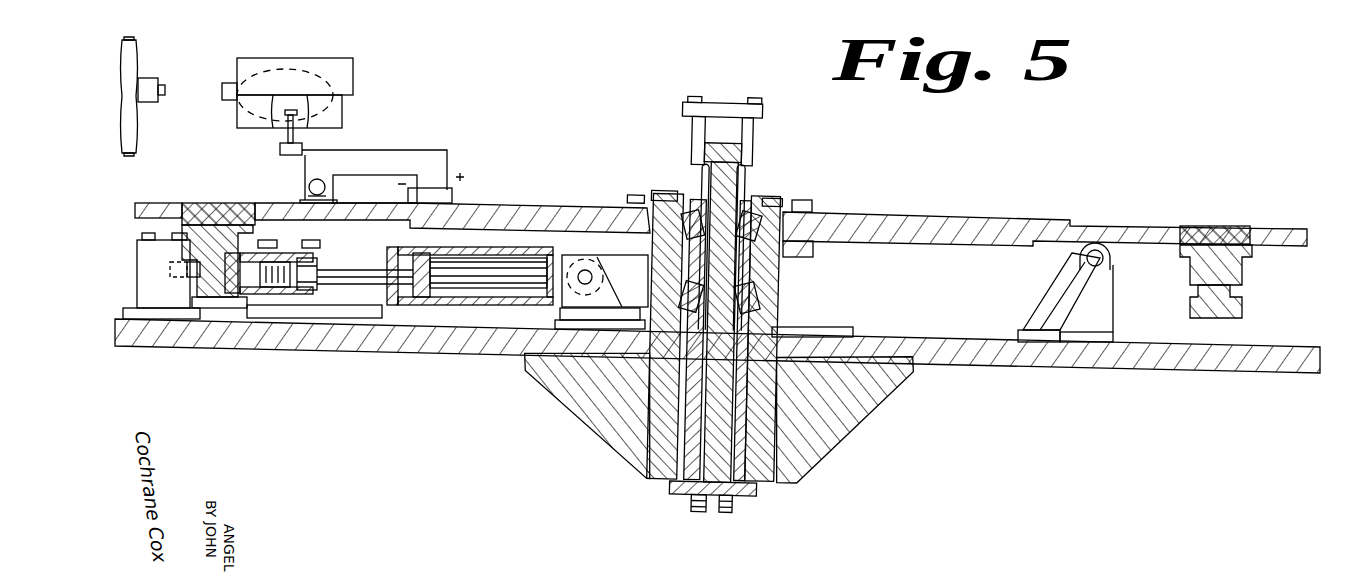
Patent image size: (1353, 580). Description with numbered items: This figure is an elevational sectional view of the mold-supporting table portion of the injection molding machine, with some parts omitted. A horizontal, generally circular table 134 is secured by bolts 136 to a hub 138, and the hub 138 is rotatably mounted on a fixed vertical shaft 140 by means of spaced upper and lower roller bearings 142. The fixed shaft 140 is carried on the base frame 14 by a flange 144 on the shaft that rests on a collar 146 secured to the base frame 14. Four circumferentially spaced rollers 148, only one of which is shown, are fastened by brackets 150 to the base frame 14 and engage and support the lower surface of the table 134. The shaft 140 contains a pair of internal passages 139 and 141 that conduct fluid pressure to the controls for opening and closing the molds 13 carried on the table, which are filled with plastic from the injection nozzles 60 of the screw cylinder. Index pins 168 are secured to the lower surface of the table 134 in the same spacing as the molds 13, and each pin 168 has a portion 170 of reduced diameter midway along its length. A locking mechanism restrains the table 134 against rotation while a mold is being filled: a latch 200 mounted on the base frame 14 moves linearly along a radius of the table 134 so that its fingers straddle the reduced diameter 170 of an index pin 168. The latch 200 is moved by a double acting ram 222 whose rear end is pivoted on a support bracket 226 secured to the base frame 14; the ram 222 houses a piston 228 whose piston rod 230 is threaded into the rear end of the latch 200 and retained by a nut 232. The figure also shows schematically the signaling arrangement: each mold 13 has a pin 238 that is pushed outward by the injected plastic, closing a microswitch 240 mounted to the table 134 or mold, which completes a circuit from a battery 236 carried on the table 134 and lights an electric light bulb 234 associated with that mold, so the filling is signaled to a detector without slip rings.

The mold 13 is at (237, 115).
The base frame 14 is at (1205, 373).
The injection nozzle 60 is at (163, 90).
The table 134 is at (985, 203).
The bolt 136 is at (812, 203).
The hub 138 is at (800, 256).
The internal passage 139 is at (692, 499).
The fixed vertical shaft 140 is at (763, 488).
The internal passage 141 is at (731, 512).
The roller bearing 142 is at (775, 200).
The flange 144 is at (773, 327).
The collar 146 is at (781, 362).
The roller 148 is at (1112, 256).
The bracket 150 is at (1100, 313).
The index pin 168 is at (1245, 270).
The reduced diameter portion 170 is at (1233, 297).
The latch 200 is at (283, 256).
The double acting ram 222 is at (468, 323).
The support bracket 226 is at (596, 272).
The piston 228 is at (424, 253).
The piston rod 230 is at (378, 284).
The nut 232 is at (315, 255).
The electric light bulb 234 is at (321, 180).
The battery 236 is at (452, 197).
The pin 238 is at (342, 120).
The microswitch 240 is at (280, 152).